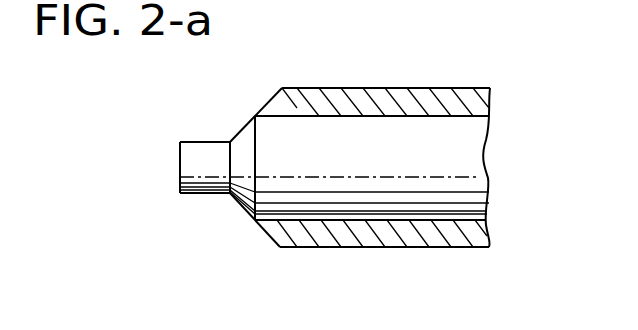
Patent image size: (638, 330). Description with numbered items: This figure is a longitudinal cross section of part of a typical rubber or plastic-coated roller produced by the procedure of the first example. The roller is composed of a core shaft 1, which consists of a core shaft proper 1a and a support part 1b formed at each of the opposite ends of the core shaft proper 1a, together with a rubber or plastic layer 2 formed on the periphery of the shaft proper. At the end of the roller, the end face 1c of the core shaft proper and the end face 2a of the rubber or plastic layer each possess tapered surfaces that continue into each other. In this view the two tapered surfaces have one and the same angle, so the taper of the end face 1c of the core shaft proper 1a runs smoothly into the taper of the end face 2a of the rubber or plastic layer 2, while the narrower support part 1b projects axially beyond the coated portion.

The core shaft 1 is at (425, 196).
The core shaft proper 1a is at (470, 165).
The support part 1b is at (204, 174).
The end face of the core shaft proper 1c is at (236, 136).
The rubber or plastic layer 2 is at (405, 98).
The end face of the rubber or plastic layer 2a is at (271, 100).